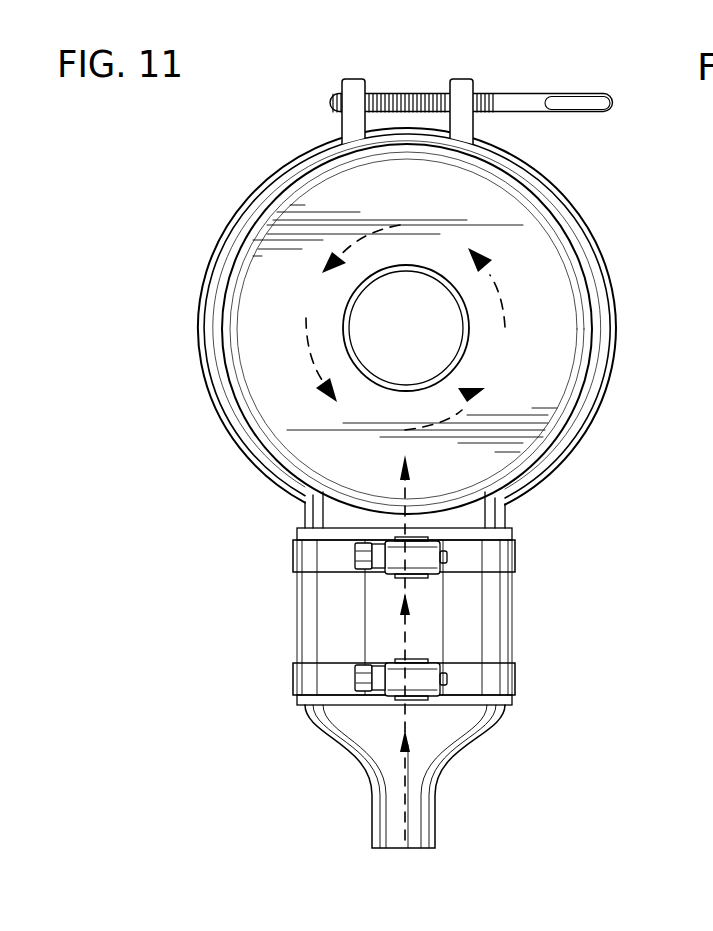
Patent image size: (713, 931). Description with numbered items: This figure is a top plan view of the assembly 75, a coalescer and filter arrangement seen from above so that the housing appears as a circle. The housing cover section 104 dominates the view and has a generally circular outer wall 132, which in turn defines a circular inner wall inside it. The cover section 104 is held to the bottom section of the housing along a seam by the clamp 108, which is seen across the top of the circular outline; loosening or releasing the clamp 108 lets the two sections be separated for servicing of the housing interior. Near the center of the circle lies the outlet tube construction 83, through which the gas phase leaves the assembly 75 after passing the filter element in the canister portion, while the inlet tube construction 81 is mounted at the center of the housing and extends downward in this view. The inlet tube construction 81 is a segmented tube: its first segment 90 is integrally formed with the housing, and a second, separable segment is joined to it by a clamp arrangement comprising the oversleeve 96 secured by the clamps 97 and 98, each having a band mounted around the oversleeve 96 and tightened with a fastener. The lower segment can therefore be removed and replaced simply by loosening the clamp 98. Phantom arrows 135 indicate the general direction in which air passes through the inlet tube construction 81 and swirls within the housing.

The assembly 75 is at (592, 185).
The inlet tube construction 81 is at (436, 828).
The outlet tube construction 83 is at (468, 318).
The first segment 90 is at (493, 517).
The oversleeve 96 is at (308, 640).
The clamp 97 is at (422, 555).
The clamp 98 is at (423, 678).
The cover section 104 is at (553, 268).
The clamp 108 is at (387, 77).
The circular outer wall 132 is at (228, 390).
The phantom arrows 135 is at (495, 278).